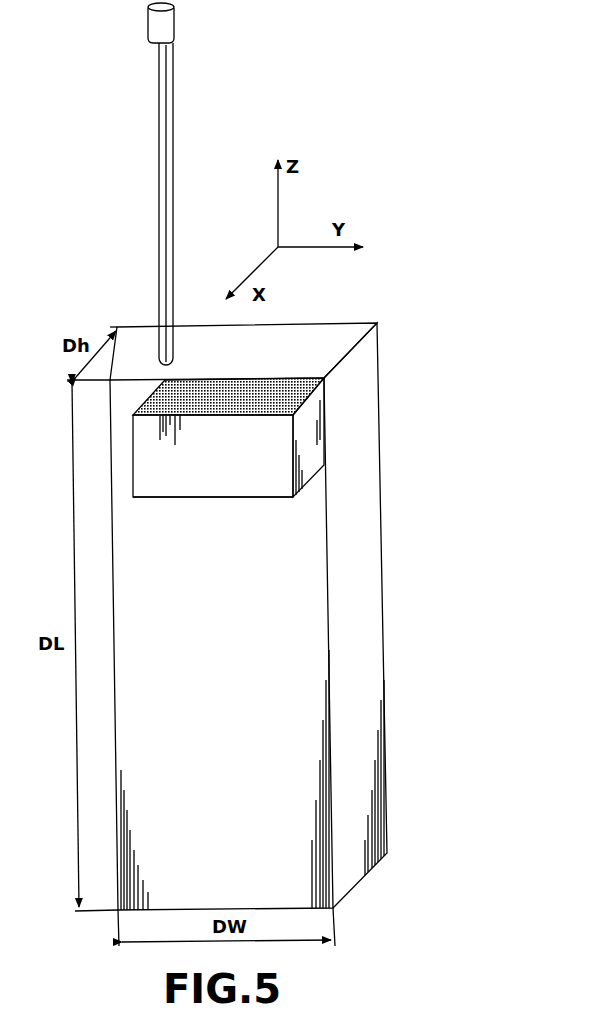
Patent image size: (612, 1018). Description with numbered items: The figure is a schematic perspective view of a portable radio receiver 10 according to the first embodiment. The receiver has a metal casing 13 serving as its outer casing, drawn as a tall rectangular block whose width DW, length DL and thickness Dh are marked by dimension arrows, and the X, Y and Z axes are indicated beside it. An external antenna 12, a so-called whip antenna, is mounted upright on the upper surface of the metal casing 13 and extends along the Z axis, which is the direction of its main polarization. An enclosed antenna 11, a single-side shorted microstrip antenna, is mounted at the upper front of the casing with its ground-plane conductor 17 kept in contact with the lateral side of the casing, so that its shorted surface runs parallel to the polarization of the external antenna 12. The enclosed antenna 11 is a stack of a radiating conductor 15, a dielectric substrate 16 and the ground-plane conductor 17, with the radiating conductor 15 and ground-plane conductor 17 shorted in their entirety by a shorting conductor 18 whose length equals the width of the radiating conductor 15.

The portable radio receiver 10 is at (301, 595).
The enclosed antenna 11 is at (268, 506).
The external antenna 12 is at (158, 193).
The metal casing 13 is at (360, 612).
The radiating conductor 15 is at (170, 477).
The dielectric substrate 16 is at (237, 397).
The ground-plane conductor 17 is at (265, 377).
The shorting conductor 18 is at (308, 435).